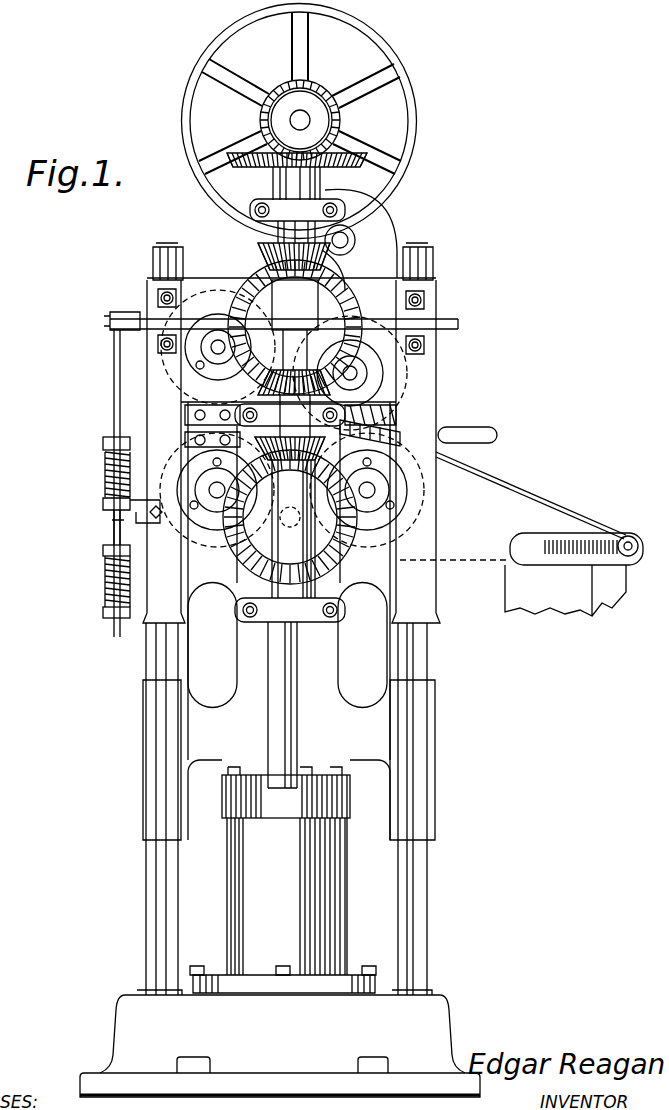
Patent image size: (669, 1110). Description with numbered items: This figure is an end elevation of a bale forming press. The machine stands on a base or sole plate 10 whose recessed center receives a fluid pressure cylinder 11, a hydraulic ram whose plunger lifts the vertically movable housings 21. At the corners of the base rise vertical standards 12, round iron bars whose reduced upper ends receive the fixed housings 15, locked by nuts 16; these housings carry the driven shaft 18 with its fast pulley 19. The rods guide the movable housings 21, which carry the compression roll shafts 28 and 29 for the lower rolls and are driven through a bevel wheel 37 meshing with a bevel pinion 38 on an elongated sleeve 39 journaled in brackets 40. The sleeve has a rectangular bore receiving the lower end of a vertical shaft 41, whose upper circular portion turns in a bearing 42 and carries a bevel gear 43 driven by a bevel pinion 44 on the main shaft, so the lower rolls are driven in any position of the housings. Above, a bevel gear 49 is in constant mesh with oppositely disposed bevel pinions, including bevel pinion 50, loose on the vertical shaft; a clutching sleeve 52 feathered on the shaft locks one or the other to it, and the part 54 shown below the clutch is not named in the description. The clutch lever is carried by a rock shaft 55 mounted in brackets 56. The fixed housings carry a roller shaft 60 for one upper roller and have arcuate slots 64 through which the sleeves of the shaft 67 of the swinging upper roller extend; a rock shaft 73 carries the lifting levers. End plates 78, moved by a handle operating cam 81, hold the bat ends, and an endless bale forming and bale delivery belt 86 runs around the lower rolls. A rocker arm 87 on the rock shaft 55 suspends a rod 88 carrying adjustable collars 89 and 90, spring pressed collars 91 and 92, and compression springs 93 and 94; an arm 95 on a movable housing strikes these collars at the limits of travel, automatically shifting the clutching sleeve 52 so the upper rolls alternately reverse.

The base or sole plate 10 is at (120, 1024).
The fluid pressure cylinder 11 is at (225, 903).
The vertical standards 12 is at (146, 905).
The housings 15 is at (440, 300).
The nuts 16 is at (153, 264).
The driven shaft 18 is at (290, 120).
The fast pulley 19 is at (412, 97).
The vertically movable housings 21 is at (343, 688).
The compression roll shaft 28 is at (214, 500).
The compression roll shaft 29 is at (370, 500).
The bevel wheel 37 is at (320, 563).
The bevel pinion 38 is at (304, 430).
The elongated sleeve 39 is at (272, 515).
The brackets 40 is at (290, 513).
The vertical shaft 41 is at (268, 712).
The bearing 42 is at (297, 221).
The bevel gear 43 is at (255, 168).
The bevel pinion 44 is at (342, 120).
The bevel gear 49 is at (359, 239).
The bevel pinion 50 is at (258, 246).
The clutching sleeve 52 is at (295, 305).
The bevel pinion 54 is at (294, 362).
The rock shaft 55 is at (443, 336).
The brackets 56 is at (158, 298).
The roller shaft 60 is at (212, 355).
The slots 64 is at (364, 312).
The shaft 67 is at (350, 373).
The rock shaft 73 is at (345, 240).
The end plates 78 is at (370, 433).
The handle operating cam 81 is at (448, 428).
The bale forming and bale delivery belt 86 is at (484, 562).
The rocker arm 87 is at (112, 328).
The rod 88 is at (114, 381).
The upper collar 89 is at (103, 442).
The lower collar 90 is at (103, 614).
The collar 91 is at (103, 504).
The collar 92 is at (103, 550).
The compression spring 93 is at (105, 468).
The compression spring 94 is at (105, 586).
The arm 95 is at (114, 522).